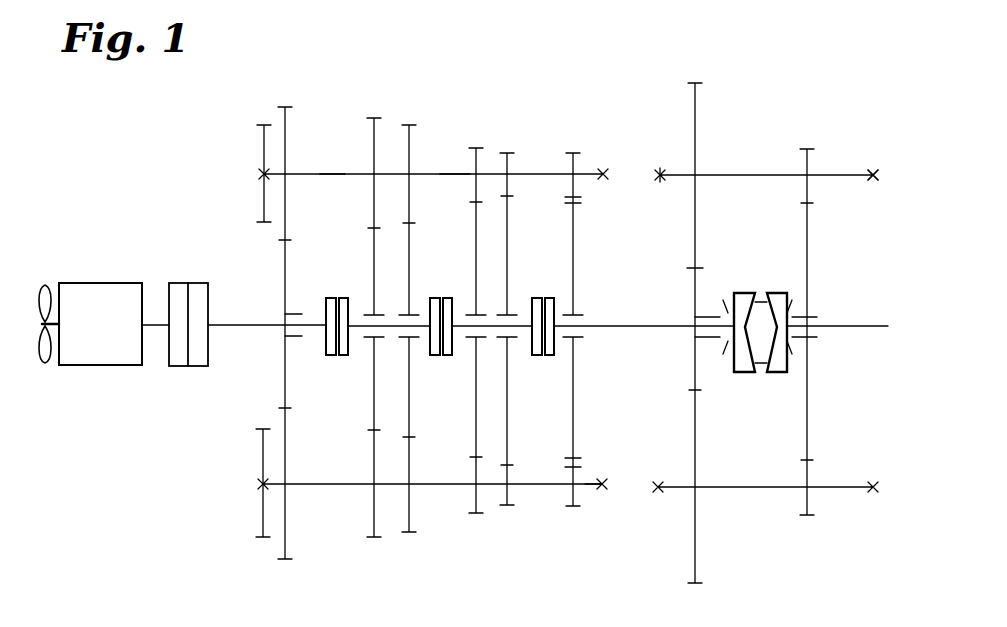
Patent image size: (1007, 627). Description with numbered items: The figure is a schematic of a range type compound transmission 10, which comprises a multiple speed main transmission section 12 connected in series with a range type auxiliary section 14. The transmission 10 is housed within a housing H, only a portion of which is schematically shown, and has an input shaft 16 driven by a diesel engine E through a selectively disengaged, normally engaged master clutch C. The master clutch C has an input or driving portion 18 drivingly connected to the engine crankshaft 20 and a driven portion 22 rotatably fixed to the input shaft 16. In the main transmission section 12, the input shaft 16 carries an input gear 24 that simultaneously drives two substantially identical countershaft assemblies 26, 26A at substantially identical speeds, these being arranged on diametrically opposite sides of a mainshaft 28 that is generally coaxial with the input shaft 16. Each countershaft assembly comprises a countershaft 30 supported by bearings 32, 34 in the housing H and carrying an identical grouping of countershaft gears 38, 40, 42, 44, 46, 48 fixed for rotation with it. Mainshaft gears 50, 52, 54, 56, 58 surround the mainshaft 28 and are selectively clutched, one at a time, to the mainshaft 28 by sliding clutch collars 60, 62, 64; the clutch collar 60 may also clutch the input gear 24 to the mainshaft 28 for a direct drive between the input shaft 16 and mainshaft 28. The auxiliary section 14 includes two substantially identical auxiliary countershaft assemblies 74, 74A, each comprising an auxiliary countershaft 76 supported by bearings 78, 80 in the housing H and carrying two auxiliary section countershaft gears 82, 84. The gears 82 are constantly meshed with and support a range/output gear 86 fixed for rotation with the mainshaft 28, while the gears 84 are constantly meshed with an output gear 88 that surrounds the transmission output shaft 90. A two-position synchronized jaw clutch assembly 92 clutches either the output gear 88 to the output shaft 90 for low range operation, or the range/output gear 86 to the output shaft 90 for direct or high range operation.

The compound transmission 10 is at (650, 124).
The main transmission section 12 is at (452, 124).
The range type auxiliary section 14 is at (748, 117).
The input shaft 16 is at (247, 322).
The input or driving portion 18 is at (178, 366).
The engine crankshaft 20 is at (156, 322).
The driven portion 22 is at (200, 366).
The input gear 24 is at (287, 300).
The countershaft assembly 26 is at (314, 172).
The countershaft assembly 26A is at (347, 487).
The mainshaft 28 is at (628, 330).
The countershaft 30 is at (333, 178).
The bearing 32 is at (263, 462).
The bearing 34 is at (605, 487).
The countershaft gear 38 is at (283, 545).
The countershaft gear 40 is at (373, 527).
The countershaft gear 42 is at (410, 520).
The countershaft gear 44 is at (476, 497).
The countershaft gear 46 is at (508, 497).
The countershaft gear 48 is at (570, 497).
The mainshaft gear 50 is at (366, 392).
The mainshaft gear 52 is at (412, 400).
The mainshaft gear 54 is at (472, 415).
The mainshaft gear 56 is at (508, 403).
The mainshaft gear 58 is at (572, 415).
The sliding clutch collar 60 is at (326, 335).
The sliding clutch collar 62 is at (445, 297).
The sliding clutch collar 64 is at (537, 297).
The auxiliary countershaft assembly 74 is at (748, 172).
The auxiliary countershaft assembly 74A is at (738, 488).
The auxiliary countershaft 76 is at (787, 177).
The bearing 78 is at (658, 180).
The bearing 80 is at (873, 175).
The auxiliary section countershaft gear 82 is at (697, 160).
The auxiliary section countershaft gear 84 is at (810, 160).
The range/output gear 86 is at (693, 267).
The output gear 88 is at (807, 283).
The transmission output shaft 90 is at (838, 323).
The synchronized jaw clutch assembly 92 is at (775, 373).
The diesel engine E is at (90, 324).
The master clutch C is at (188, 283).
The housing H is at (264, 152).